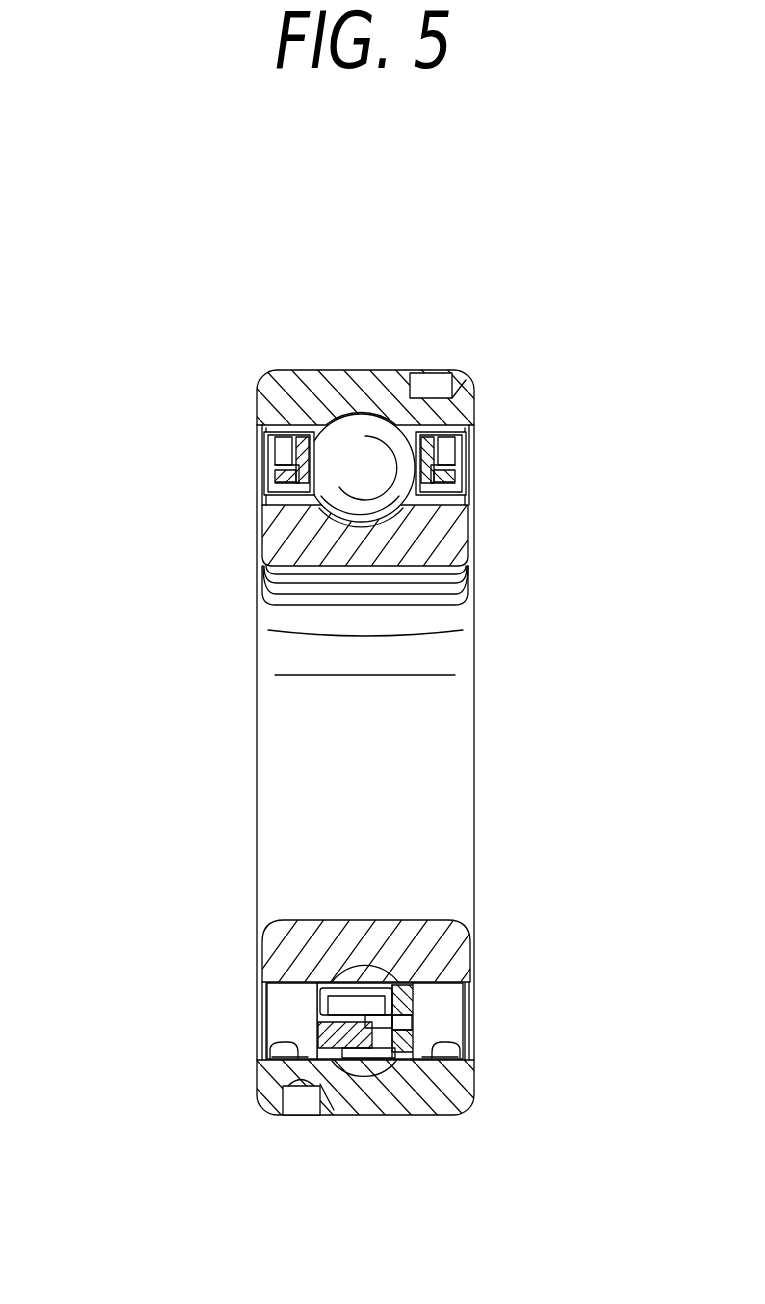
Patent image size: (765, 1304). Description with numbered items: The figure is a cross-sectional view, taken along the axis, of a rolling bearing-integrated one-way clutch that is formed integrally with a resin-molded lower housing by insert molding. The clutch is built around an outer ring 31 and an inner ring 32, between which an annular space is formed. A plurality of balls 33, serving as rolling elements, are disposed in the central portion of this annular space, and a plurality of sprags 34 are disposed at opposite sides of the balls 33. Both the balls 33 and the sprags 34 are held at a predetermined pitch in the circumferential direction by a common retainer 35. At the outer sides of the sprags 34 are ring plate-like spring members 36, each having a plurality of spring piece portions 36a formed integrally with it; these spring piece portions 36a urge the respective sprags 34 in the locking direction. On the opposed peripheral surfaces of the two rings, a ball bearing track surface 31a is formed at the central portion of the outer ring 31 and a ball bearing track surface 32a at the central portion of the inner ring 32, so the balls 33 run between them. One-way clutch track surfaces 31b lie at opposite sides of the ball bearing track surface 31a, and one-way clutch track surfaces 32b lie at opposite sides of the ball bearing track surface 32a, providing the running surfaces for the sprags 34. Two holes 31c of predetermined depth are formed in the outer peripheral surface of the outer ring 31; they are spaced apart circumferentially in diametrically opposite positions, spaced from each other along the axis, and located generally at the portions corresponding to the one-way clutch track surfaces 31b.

The outer ring 31 is at (270, 368).
The ball bearing track surface 31a is at (345, 427).
The one-way clutch track surface 31b is at (255, 1047).
The hole 31c is at (447, 368).
The inner ring 32 is at (440, 567).
The ball bearing track surface 32a is at (367, 513).
The one-way clutch track surface 32b is at (268, 507).
The ball 33 is at (365, 430).
The sprag 34 is at (288, 1008).
The retainer 35 is at (353, 1040).
The spring member 36 is at (262, 450).
The spring piece portion 36a is at (262, 457).